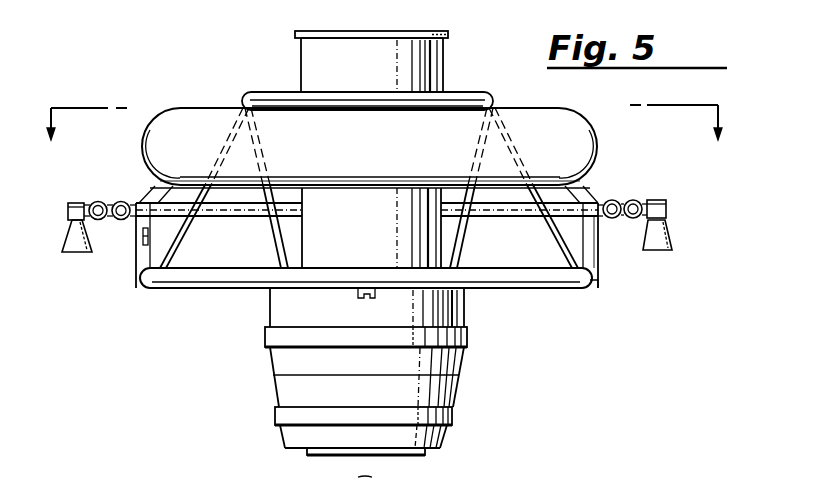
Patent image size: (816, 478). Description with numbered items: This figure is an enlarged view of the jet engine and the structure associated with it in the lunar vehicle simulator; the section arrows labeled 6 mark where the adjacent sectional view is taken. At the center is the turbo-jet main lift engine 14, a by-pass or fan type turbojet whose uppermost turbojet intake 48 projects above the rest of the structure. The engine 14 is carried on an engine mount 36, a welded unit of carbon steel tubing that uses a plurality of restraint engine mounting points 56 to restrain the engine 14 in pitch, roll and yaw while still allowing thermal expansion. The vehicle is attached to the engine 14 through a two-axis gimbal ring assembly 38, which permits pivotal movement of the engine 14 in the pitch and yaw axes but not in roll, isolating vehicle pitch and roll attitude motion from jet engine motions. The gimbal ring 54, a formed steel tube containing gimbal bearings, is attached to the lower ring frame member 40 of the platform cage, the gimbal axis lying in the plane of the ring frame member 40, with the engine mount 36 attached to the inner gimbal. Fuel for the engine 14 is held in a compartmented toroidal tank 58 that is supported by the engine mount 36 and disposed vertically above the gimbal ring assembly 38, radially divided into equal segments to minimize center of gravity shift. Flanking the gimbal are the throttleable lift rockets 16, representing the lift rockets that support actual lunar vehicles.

The section line 6- 6 is at (382, 134).
The turbo-jet main lift engine 14 is at (466, 367).
The throttleable lift rockets 16 is at (66, 235).
The engine mount 36 is at (222, 288).
The two-axis gimbal ring assembly 38 is at (110, 201).
The lower ring frame member 40 is at (94, 200).
The turbojet intake 48 is at (303, 36).
The gimbal ring 54 is at (611, 200).
The restraint engine mounting points 56 is at (270, 239).
The compartmented toroidal tank 58 is at (592, 136).